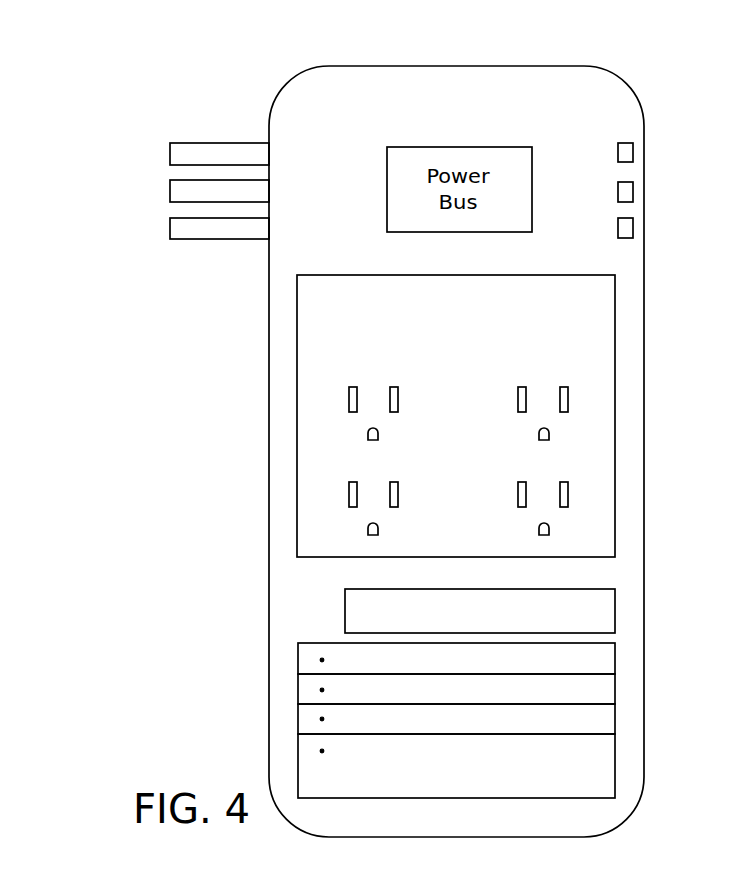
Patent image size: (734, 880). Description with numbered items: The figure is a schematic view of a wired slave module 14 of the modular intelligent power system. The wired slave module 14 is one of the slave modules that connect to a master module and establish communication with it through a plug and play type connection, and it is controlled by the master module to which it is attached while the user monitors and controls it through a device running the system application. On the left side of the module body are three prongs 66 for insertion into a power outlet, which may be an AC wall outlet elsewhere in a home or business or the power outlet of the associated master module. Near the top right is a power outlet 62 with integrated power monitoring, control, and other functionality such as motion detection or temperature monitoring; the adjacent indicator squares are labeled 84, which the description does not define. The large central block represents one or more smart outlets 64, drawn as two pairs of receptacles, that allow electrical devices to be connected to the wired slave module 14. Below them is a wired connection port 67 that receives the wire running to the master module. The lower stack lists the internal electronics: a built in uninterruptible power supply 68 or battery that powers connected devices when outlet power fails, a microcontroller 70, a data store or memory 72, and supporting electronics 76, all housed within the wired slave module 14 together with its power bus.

The wired slave module 14 is at (630, 83).
The power outlet 62 is at (633, 153).
The indicator lights 84 is at (676, 207).
The smart outlets 64 is at (615, 368).
The prongs 66 is at (170, 160).
The wired connection port 67 is at (615, 610).
The uninterruptible power supply 68 is at (298, 660).
The microcontroller 70 is at (298, 686).
The memory 72 is at (298, 715).
The supporting electronics 76 is at (298, 745).